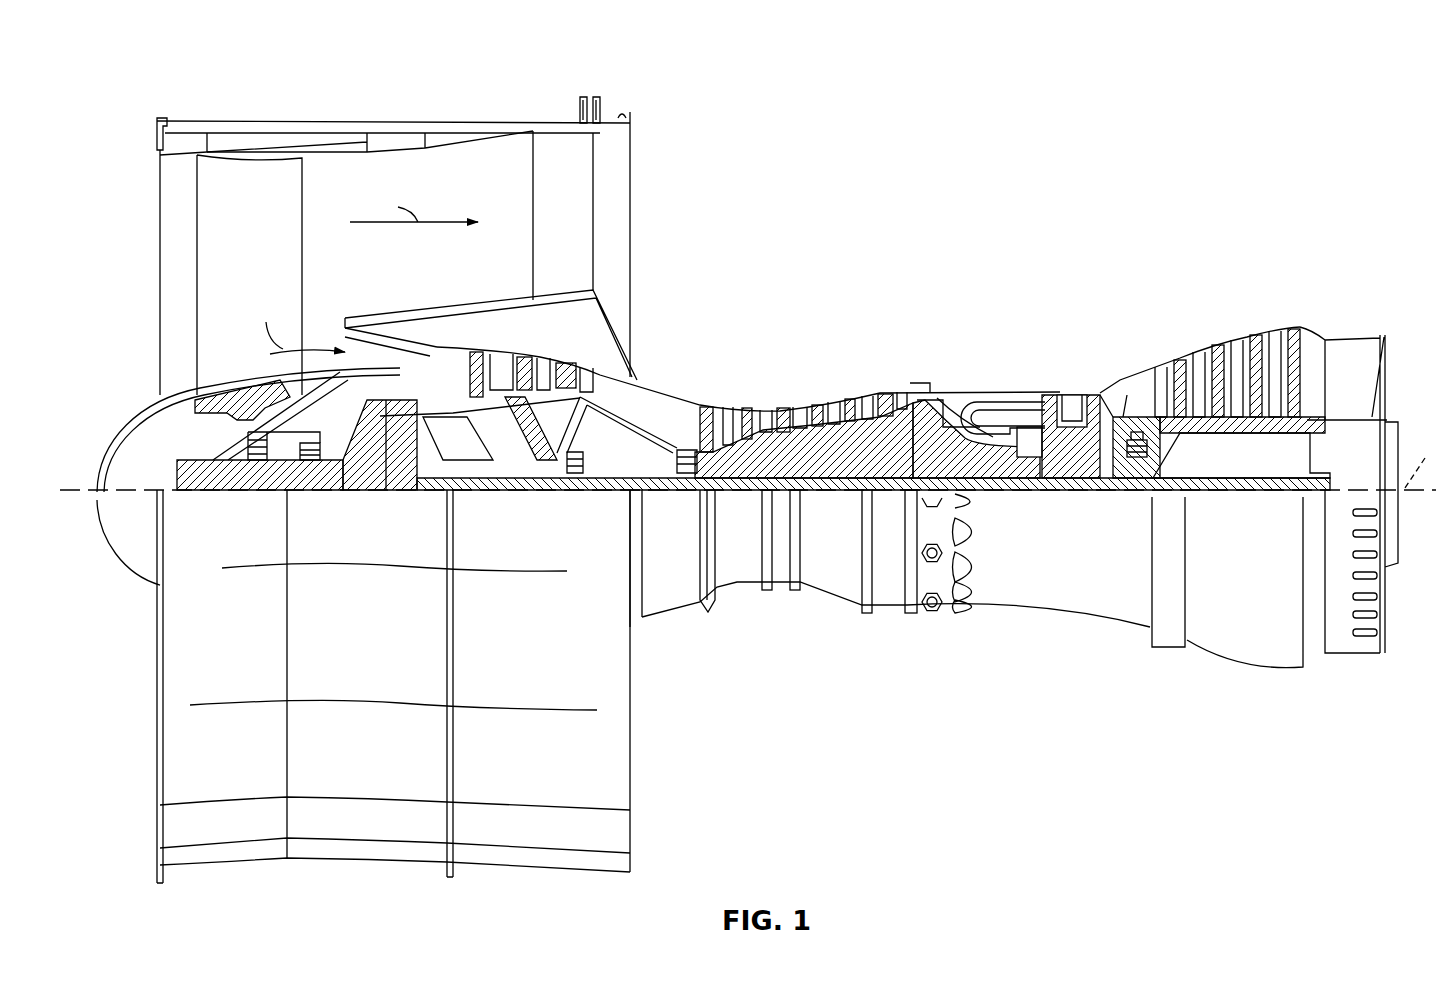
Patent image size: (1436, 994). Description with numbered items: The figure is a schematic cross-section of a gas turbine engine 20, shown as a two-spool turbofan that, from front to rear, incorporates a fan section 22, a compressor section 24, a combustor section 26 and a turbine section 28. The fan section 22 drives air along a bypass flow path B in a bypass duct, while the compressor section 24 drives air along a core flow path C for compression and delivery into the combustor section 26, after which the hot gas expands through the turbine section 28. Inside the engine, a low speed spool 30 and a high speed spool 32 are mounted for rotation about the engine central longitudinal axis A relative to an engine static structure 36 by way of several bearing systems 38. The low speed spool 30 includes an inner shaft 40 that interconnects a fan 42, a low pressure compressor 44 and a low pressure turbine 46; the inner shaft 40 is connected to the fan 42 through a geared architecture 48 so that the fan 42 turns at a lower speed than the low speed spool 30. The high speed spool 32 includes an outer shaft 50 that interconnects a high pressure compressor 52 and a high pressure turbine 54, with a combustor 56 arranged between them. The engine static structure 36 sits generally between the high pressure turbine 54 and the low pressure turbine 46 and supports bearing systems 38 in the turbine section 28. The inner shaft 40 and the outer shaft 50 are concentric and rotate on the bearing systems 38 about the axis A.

The gas turbine engine 20 is at (1204, 161).
The fan section 22 is at (264, 112).
The compressor section 24 is at (822, 347).
The combustor section 26 is at (1020, 323).
The turbine section 28 is at (1137, 328).
The low speed spool 30 is at (852, 500).
The high speed spool 32 is at (903, 445).
The engine static structure 36 is at (892, 617).
The bearing systems 38 is at (261, 458).
The inner shaft 40 is at (643, 490).
The fan 42 is at (275, 256).
The low pressure compressor 44 is at (546, 370).
The low pressure turbine 46 is at (1238, 343).
The geared architecture 48 is at (394, 466).
The outer shaft 50 is at (1020, 481).
The high pressure compressor 52 is at (811, 463).
The high pressure turbine 54 is at (1072, 387).
The combustor 56 is at (1008, 413).